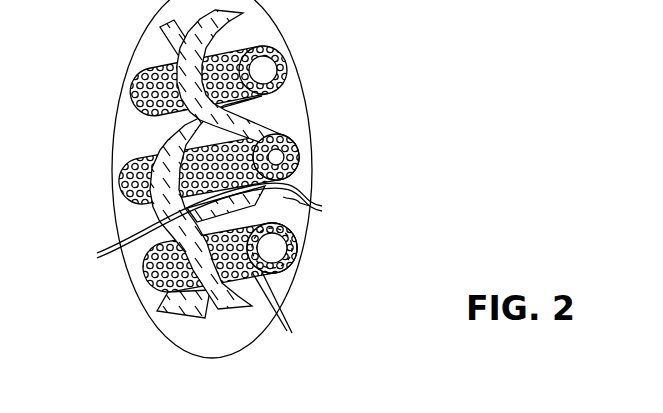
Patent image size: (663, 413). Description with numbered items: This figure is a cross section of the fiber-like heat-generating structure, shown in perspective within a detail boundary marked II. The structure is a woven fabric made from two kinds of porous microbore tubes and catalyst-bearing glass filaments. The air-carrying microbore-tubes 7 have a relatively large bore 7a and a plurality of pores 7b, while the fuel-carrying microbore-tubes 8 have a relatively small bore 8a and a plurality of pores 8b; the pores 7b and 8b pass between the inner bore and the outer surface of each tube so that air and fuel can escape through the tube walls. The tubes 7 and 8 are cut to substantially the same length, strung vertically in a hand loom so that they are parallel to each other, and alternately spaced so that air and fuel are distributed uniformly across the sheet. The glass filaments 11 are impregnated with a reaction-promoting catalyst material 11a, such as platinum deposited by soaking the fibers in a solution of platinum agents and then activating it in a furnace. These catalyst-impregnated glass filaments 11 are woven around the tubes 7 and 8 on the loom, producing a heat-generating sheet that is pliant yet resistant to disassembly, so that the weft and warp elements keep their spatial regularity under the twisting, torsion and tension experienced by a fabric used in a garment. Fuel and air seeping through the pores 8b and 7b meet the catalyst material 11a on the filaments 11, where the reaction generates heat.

The section boundary II is at (112, 128).
The air-carrying microbore-tube 7 is at (262, 272).
The relatively large bore 7a is at (282, 248).
The pores 7b is at (283, 316).
The fuel-carrying microbore-tube 8 is at (290, 134).
The relatively small bore 8a is at (291, 160).
The pores 8b is at (312, 208).
The glass filaments 11 is at (200, 320).
The reaction-promoting catalyst material 11a is at (188, 225).